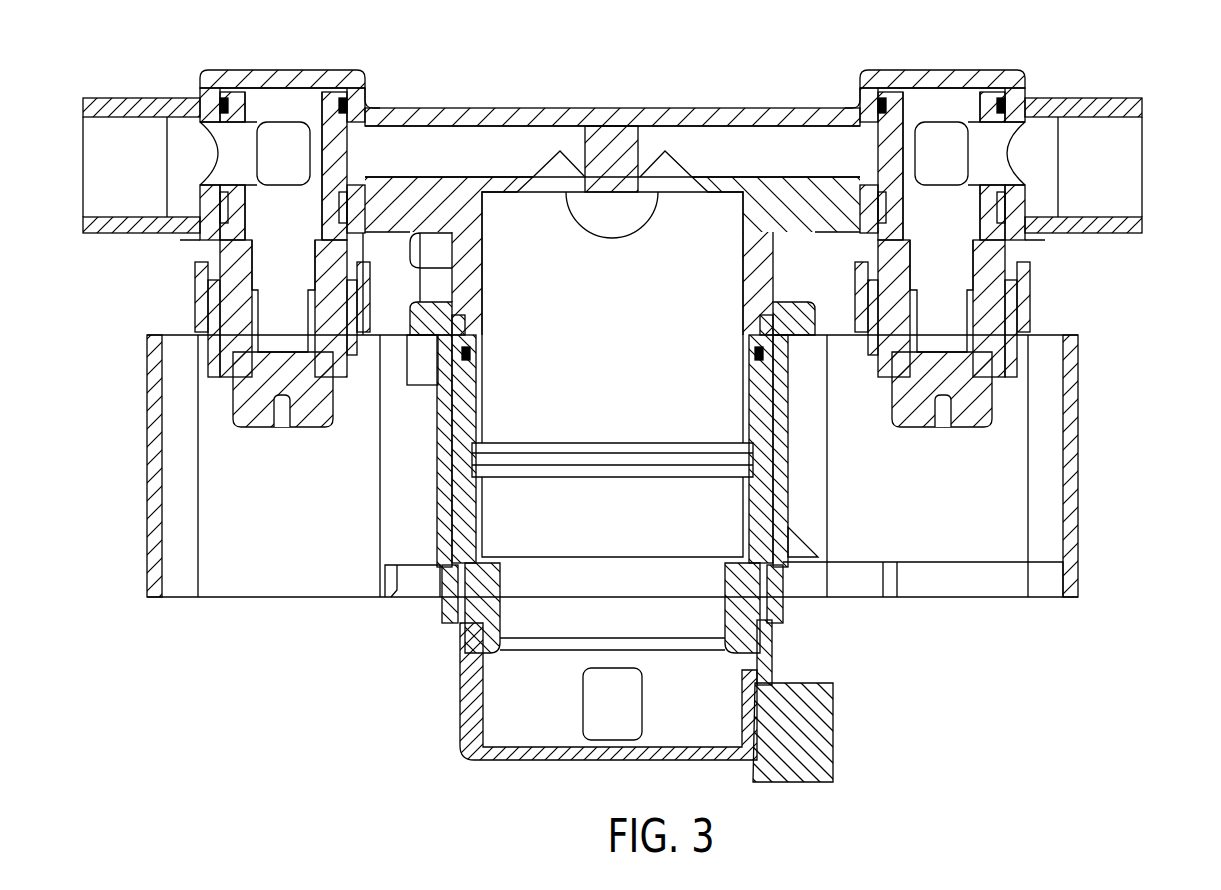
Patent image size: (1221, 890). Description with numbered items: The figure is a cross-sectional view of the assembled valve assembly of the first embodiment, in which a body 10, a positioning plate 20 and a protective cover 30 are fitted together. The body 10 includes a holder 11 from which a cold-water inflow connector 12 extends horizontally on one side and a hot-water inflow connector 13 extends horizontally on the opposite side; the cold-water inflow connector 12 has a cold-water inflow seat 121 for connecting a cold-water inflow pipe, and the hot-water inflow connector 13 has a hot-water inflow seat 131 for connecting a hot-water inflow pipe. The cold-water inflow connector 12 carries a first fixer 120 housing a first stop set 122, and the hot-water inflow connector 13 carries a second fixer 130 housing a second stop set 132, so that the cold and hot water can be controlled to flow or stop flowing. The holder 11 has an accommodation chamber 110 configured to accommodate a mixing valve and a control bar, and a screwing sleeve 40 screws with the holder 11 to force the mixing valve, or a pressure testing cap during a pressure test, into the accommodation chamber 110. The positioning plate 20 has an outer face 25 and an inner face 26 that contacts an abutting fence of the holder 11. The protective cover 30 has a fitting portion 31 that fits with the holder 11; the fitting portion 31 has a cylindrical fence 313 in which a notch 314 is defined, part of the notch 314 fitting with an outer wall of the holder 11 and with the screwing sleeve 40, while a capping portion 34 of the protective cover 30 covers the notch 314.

The body 10 is at (610, 108).
The holder 11 is at (414, 248).
The cold-water inflow connector 12 is at (400, 108).
The hot-water inflow connector 13 is at (848, 106).
The positioning plate 20 is at (814, 321).
The outer face 25 is at (800, 337).
The inner face 26 is at (795, 300).
The protective cover 30 is at (1079, 497).
The fitting portion 31 is at (437, 500).
The capping portion 34 is at (515, 762).
The screwing sleeve 40 is at (762, 513).
The accommodation chamber 110 is at (486, 285).
The first fixer 120 is at (200, 253).
The cold-water inflow seat 121 is at (122, 97).
The first stop set 122 is at (262, 427).
The second fixer 130 is at (1030, 250).
The hot-water inflow seat 131 is at (1101, 98).
The second stop set 132 is at (980, 430).
The cylindrical fence 313 is at (440, 517).
The notch 314 is at (756, 530).